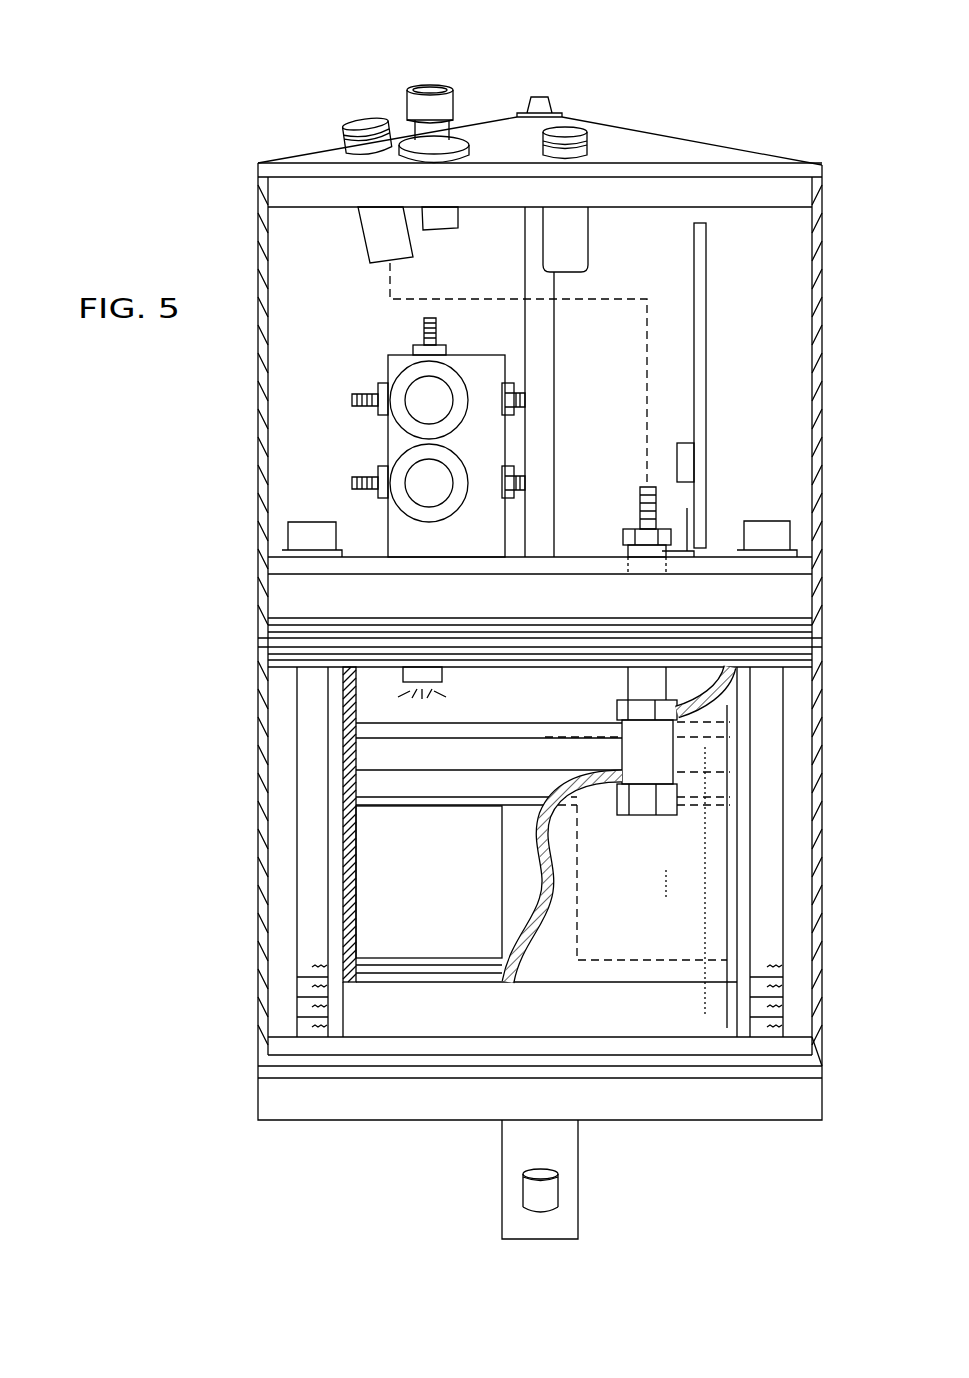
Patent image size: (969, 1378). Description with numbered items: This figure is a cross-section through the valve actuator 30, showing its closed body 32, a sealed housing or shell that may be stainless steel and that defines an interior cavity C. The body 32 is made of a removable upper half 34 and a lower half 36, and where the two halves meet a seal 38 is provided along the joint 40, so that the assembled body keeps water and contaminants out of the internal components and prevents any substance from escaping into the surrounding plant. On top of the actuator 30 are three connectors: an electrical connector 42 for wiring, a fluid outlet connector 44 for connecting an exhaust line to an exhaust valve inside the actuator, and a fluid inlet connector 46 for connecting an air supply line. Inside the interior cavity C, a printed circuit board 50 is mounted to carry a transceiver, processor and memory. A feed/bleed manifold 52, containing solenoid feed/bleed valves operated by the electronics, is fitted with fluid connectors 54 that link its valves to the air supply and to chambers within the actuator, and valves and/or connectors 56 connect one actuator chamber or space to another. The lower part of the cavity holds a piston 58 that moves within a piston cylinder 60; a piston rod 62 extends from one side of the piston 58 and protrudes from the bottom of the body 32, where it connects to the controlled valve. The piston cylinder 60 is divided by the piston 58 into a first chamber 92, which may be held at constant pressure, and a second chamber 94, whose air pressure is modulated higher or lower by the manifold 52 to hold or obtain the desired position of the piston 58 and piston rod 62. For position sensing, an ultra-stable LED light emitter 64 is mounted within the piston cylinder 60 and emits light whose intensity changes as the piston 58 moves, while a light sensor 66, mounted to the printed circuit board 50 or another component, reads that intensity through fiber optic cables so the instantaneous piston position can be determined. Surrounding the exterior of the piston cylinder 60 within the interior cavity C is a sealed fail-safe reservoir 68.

The actuator 30 is at (752, 72).
The body 32 is at (824, 170).
The upper half 34 is at (262, 378).
The lower half 36 is at (262, 900).
The seal 38 is at (262, 640).
The joint 40 is at (826, 641).
The electrical connector 42 is at (424, 86).
The fluid outlet connector 44 is at (591, 140).
The fluid inlet connector 46 is at (365, 118).
The printed circuit board 50 is at (703, 315).
The feed/bleed manifold 52 is at (456, 352).
The fluid connectors 54 is at (424, 330).
The valves and/or connectors 56 is at (638, 512).
The piston 58 is at (377, 753).
The piston cylinder 60 is at (352, 838).
The piston rod 62 is at (517, 890).
The LED light emitter 64 is at (448, 672).
The light sensor 66 is at (680, 445).
The fail-safe reservoir 68 is at (792, 898).
The first chamber 92 is at (550, 700).
The second chamber 94 is at (388, 898).
The interior cavity C is at (757, 377).